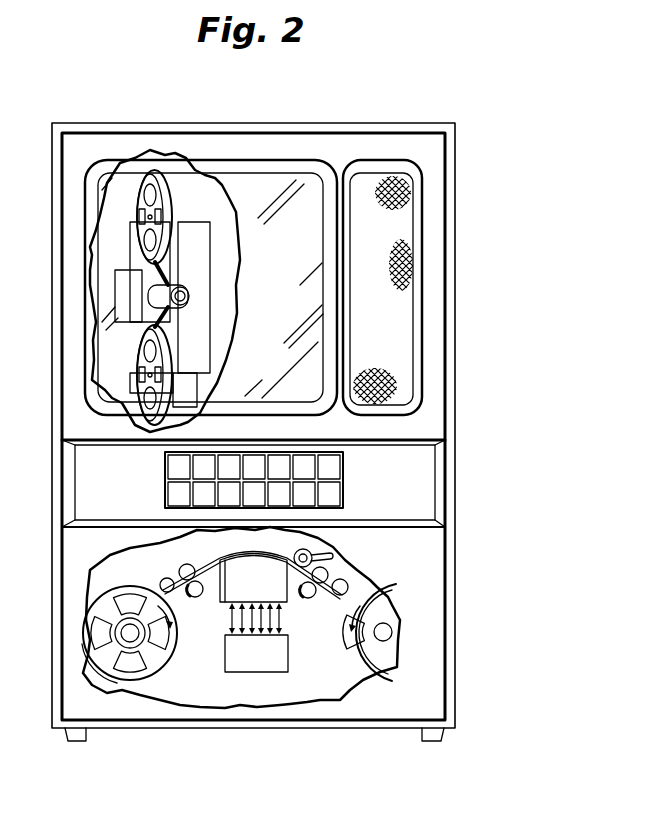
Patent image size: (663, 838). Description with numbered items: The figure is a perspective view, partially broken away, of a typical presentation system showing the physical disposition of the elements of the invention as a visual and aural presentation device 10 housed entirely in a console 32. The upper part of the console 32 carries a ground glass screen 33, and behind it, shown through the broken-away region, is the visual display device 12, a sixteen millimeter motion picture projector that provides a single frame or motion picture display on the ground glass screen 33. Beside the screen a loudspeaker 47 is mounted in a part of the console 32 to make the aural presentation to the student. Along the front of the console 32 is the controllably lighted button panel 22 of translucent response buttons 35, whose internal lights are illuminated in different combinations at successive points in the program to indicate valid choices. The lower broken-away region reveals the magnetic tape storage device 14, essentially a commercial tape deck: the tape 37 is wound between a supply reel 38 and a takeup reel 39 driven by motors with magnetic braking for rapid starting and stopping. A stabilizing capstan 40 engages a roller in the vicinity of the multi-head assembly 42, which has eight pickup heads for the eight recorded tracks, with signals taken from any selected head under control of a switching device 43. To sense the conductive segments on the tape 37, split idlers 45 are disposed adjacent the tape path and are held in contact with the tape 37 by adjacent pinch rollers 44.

The visual and aural presentation device 10 is at (494, 136).
The visual display device 12 is at (184, 226).
The magnetic tape storage device 14 is at (241, 651).
The controllably lighted button panel 22 is at (262, 480).
The console 32 is at (457, 240).
The ground glass screen 33 is at (300, 254).
The response buttons 35 is at (166, 494).
The tape 37 is at (206, 576).
The supply reel 38 is at (165, 668).
The takeup reel 39 is at (346, 668).
The stabilizing capstan 40 is at (312, 560).
The multi-head assembly 42 is at (268, 589).
The switching device 43 is at (270, 667).
The pinch rollers 44 is at (183, 568).
The split idlers 45 is at (197, 597).
The loudspeaker 47 is at (398, 332).